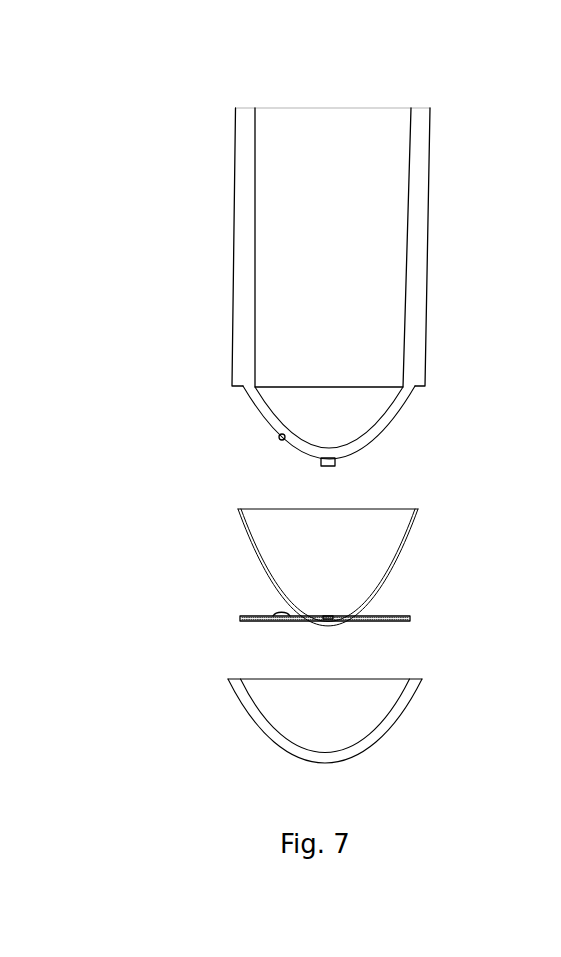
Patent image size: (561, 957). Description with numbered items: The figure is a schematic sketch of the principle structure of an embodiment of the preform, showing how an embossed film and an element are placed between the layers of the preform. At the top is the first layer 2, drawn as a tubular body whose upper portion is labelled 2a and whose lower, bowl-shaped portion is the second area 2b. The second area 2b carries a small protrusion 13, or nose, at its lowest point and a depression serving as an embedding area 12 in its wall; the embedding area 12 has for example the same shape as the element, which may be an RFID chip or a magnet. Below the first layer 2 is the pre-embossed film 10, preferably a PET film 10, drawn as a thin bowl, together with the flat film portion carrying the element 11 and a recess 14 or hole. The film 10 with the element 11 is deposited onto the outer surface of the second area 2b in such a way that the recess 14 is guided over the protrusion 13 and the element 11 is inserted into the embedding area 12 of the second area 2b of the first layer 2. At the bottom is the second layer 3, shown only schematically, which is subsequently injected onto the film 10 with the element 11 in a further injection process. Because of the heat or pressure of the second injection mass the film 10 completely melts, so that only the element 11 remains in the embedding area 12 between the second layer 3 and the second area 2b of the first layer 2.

The first layer 2 is at (296, 269).
The cylindrical wall portion of housing 2a is at (252, 191).
The second area 2b is at (262, 421).
The embedding area 12 is at (279, 439).
The protrusion 13 is at (325, 464).
The film 10 is at (395, 545).
The element 11 is at (282, 613).
The recess 14 is at (325, 617).
The second layer 3 is at (252, 718).